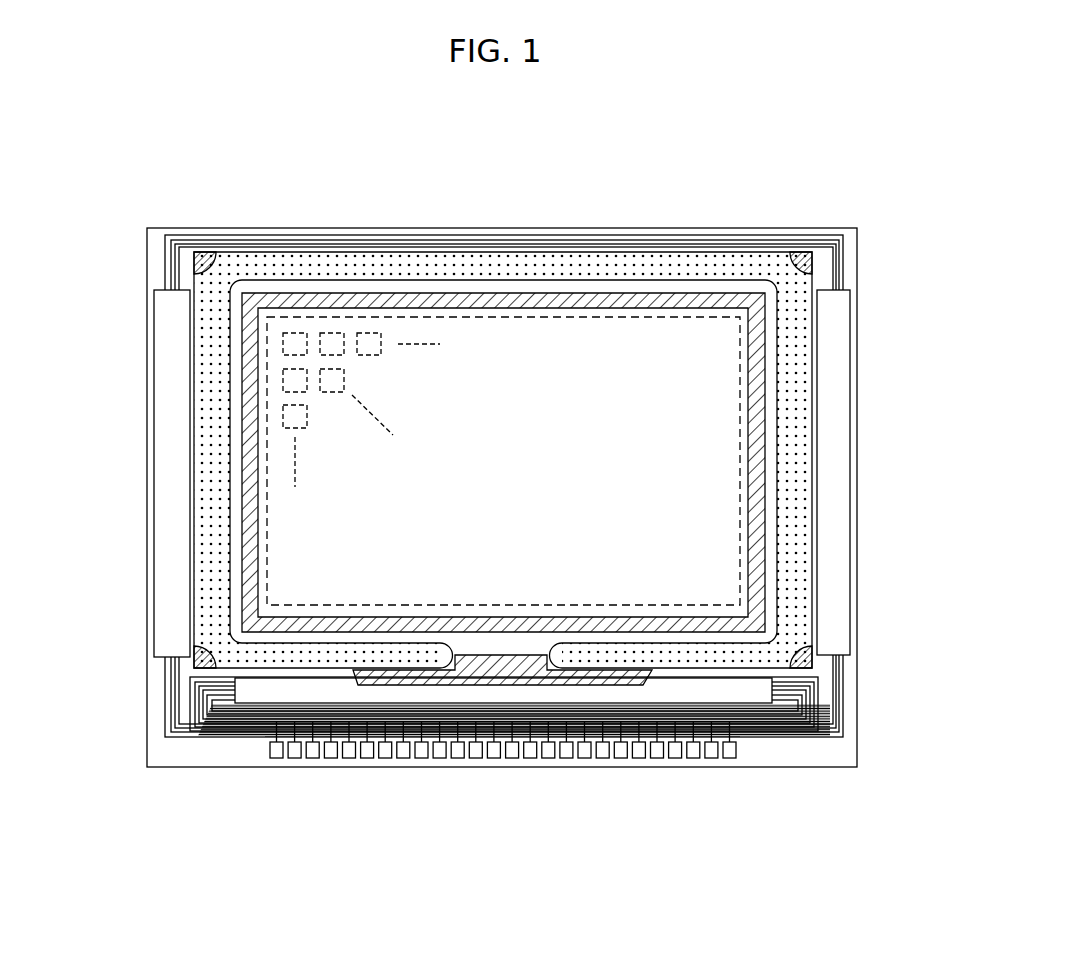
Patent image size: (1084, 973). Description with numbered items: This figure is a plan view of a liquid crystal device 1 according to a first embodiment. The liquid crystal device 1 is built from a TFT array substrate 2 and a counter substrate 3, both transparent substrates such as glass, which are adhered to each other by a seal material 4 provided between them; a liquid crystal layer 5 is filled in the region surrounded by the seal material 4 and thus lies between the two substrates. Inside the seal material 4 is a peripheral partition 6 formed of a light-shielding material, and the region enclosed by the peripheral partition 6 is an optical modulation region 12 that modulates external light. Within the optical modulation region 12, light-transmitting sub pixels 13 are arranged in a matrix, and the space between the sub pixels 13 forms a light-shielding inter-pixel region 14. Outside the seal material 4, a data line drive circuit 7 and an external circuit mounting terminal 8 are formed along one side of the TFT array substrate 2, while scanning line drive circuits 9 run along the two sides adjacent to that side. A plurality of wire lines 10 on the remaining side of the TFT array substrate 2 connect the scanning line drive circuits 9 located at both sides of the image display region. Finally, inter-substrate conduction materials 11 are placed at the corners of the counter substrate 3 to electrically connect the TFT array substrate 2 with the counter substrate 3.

The liquid crystal device 1 is at (836, 199).
The TFT array substrate 2 is at (508, 228).
The counter substrate 3 is at (608, 282).
The seal material 4 is at (790, 415).
The liquid crystal layer 5 is at (695, 373).
The peripheral partition 6 is at (760, 490).
The data line drive circuit 7 is at (508, 662).
The external circuit mounting terminal 8 is at (418, 757).
The scanning line drive circuits 9 is at (168, 468).
The wire lines 10 is at (292, 234).
The inter-substrate conduction materials 11 is at (203, 258).
The optical modulation region 12 is at (250, 553).
The sub pixels 13 is at (283, 412).
The inter-pixel region 14 is at (352, 333).